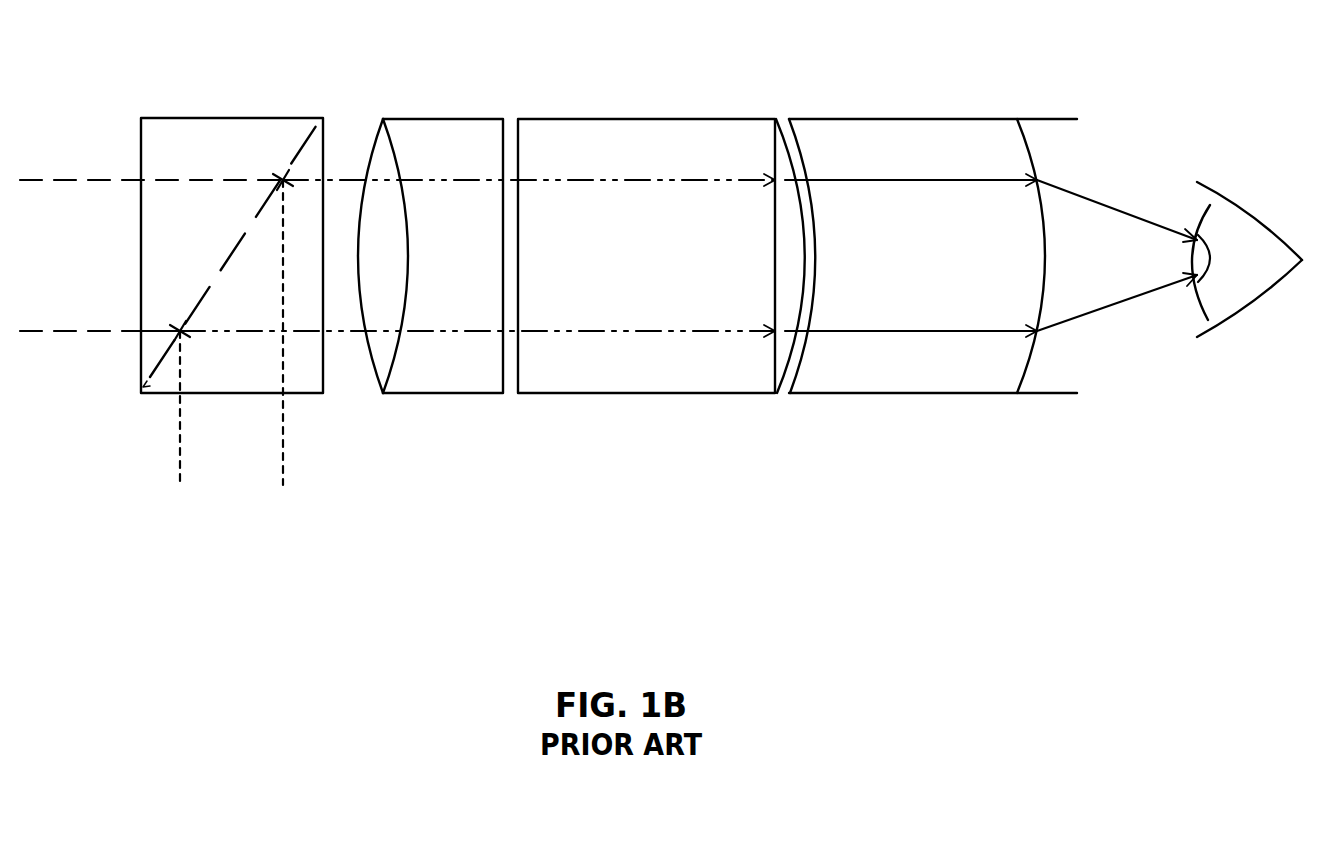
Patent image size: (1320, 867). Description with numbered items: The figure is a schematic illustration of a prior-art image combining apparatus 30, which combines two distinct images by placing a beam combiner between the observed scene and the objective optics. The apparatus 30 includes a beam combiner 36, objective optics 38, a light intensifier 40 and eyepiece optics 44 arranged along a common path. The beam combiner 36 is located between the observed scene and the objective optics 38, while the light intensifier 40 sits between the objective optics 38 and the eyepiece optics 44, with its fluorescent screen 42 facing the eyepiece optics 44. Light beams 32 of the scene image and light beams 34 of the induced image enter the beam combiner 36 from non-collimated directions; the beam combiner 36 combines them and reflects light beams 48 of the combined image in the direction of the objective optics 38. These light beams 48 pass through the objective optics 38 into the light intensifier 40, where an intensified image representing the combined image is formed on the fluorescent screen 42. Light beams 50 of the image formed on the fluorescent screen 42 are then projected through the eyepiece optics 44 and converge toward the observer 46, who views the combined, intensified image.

The image combining apparatus 30 is at (402, 547).
The light beams of the scene image 32 is at (93, 180).
The light beams of the induced image 34 is at (178, 452).
The beam combiner 36 is at (217, 117).
The objective optics 38 is at (428, 396).
The light intensifier 40 is at (637, 396).
The fluorescent screen 42 is at (780, 350).
The eyepiece optics 44 is at (907, 396).
The observer 46 is at (1250, 287).
The light beams of the combined image 48 is at (337, 180).
The light beams of the image formed on the fluorescent screen 50 is at (835, 180).